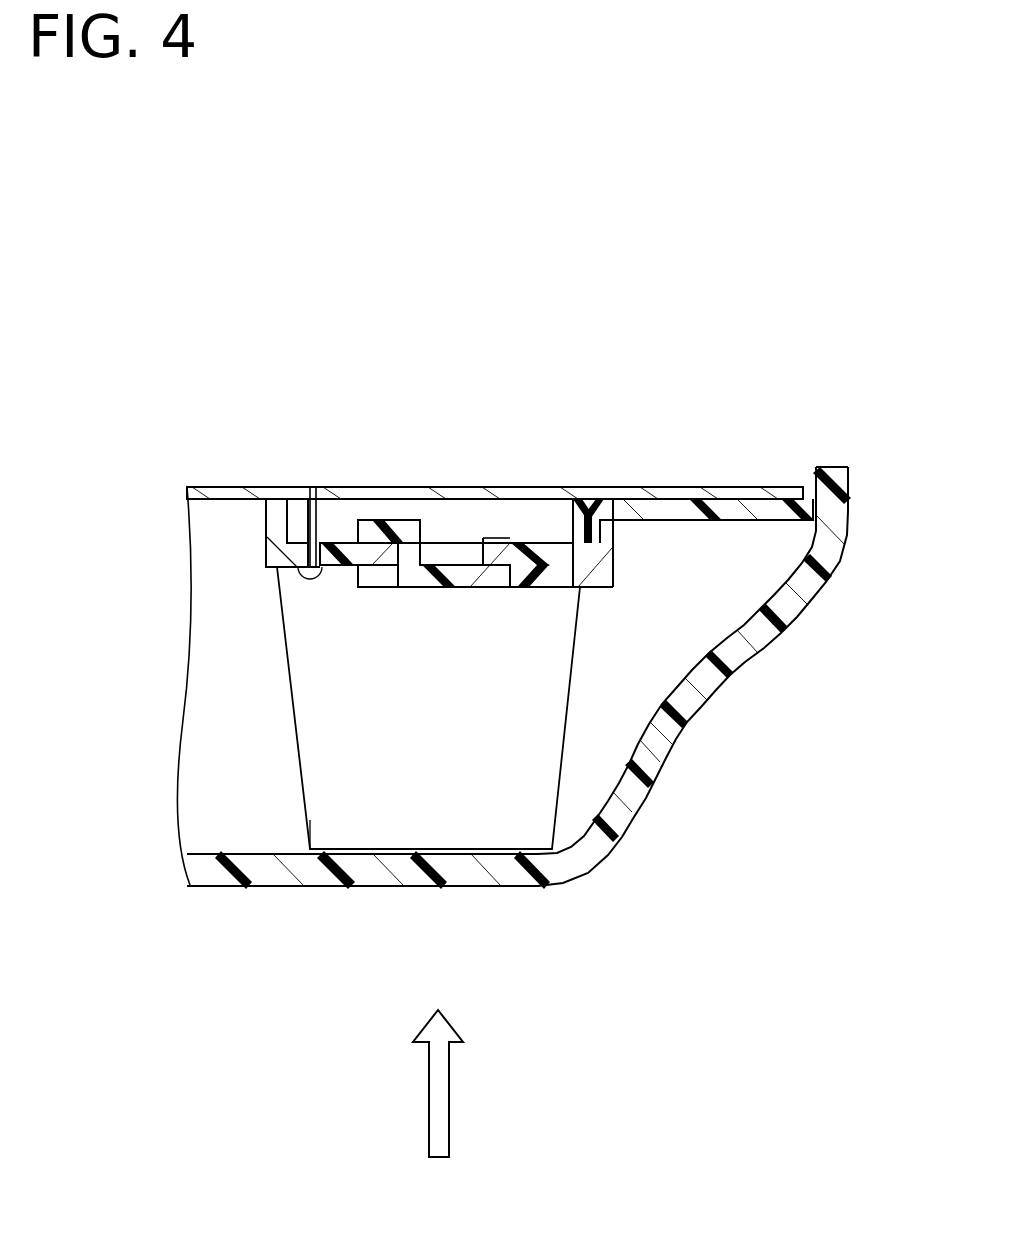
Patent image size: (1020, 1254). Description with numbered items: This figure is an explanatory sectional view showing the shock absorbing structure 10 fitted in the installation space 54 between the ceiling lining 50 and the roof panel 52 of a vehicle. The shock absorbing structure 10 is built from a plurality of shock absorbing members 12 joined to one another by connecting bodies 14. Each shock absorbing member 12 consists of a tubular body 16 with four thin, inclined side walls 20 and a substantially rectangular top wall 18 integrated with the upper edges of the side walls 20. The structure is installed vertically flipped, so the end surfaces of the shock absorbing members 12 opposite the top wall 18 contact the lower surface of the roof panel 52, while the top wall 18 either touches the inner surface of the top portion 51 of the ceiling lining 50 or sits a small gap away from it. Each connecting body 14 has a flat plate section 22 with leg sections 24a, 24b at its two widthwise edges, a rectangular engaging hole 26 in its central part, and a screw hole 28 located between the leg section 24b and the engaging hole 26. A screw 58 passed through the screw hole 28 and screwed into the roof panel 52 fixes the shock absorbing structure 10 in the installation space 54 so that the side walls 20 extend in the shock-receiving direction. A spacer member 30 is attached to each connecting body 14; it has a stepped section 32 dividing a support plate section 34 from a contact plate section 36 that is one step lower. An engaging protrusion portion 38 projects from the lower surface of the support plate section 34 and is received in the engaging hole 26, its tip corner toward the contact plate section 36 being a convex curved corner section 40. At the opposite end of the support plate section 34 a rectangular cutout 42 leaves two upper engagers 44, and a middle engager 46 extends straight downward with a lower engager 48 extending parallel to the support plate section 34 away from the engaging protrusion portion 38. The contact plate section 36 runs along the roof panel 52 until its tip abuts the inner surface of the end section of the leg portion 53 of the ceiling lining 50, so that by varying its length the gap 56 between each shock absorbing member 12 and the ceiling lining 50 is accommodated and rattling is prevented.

The shock absorbing structure 10 is at (256, 766).
The shock absorbing member 12 is at (278, 960).
The connecting body 14 is at (255, 546).
The tubular body 16 is at (365, 770).
The top wall 18 is at (373, 857).
The side wall 20 is at (244, 945).
The flat plate section 22 is at (545, 540).
The leg section 24a is at (566, 522).
The leg section 24b is at (277, 513).
The engaging hole 26 is at (508, 575).
The screw hole 28 is at (295, 577).
The spacer member 30 is at (650, 570).
The stepped section 32 is at (640, 512).
The support plate section 34 is at (563, 577).
The contact plate section 36 is at (763, 503).
The engaging protrusion portion 38 is at (467, 540).
The curved corner section 40 is at (495, 548).
The cutout 42 is at (395, 590).
The upper engager 44 is at (365, 583).
The middle engager 46 is at (432, 540).
The lower engager 48 is at (376, 535).
The ceiling lining 50 is at (528, 975).
The top portion 51 is at (467, 873).
The roof panel 52 is at (705, 503).
The leg portion 53 is at (653, 760).
The installation space 54 is at (224, 726).
The gap 56 is at (680, 613).
The screw 58 is at (312, 584).